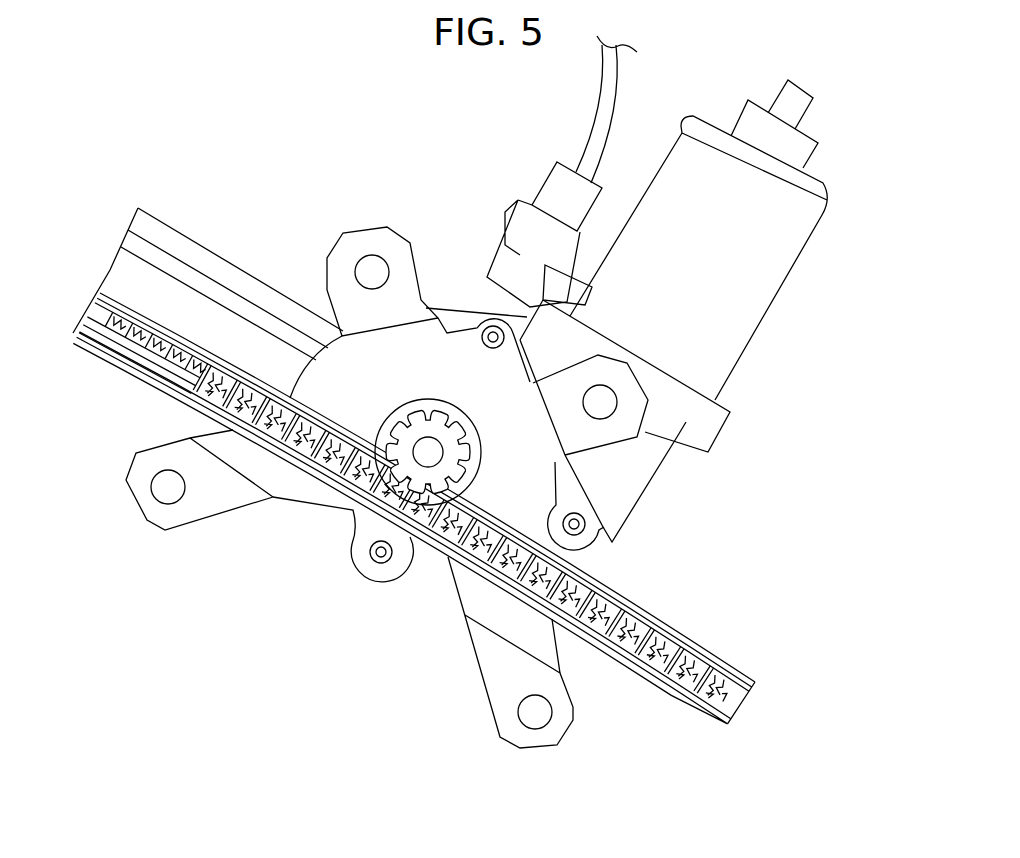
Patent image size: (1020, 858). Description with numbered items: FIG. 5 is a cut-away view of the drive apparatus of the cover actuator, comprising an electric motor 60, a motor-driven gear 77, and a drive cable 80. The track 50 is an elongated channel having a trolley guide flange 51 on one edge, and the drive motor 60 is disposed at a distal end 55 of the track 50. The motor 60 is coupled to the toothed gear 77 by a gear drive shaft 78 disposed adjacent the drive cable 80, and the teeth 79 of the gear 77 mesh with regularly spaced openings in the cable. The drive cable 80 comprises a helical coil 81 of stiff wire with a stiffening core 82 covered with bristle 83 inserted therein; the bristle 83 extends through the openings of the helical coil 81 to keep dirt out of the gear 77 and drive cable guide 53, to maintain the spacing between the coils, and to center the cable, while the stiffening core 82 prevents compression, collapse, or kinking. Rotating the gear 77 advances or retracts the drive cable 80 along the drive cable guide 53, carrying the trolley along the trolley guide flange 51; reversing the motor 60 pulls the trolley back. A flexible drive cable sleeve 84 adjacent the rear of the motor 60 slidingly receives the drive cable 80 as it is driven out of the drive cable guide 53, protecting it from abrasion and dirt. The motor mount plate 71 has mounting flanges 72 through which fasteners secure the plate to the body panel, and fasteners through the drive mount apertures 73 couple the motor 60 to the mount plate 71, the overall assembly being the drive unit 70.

The track 50 is at (183, 234).
The trolley guide flange 51 is at (225, 262).
The drive cable guide 53 is at (150, 365).
The distal end 55 is at (457, 252).
The electric motor 60 is at (727, 258).
The drive unit 70 is at (388, 604).
The motor mount plate 71 is at (434, 572).
The mounting flanges 72 is at (348, 232).
The drive mount apertures 73 is at (494, 348).
The motor-driven gear 77 is at (380, 432).
The gear drive shaft 78 is at (433, 450).
The teeth 79 is at (423, 416).
The drive cable 80 is at (439, 533).
The helical coil 81 is at (655, 660).
The stiffening core 82 is at (737, 673).
The bristle 83 is at (688, 657).
The drive cable sleeve 84 is at (690, 697).